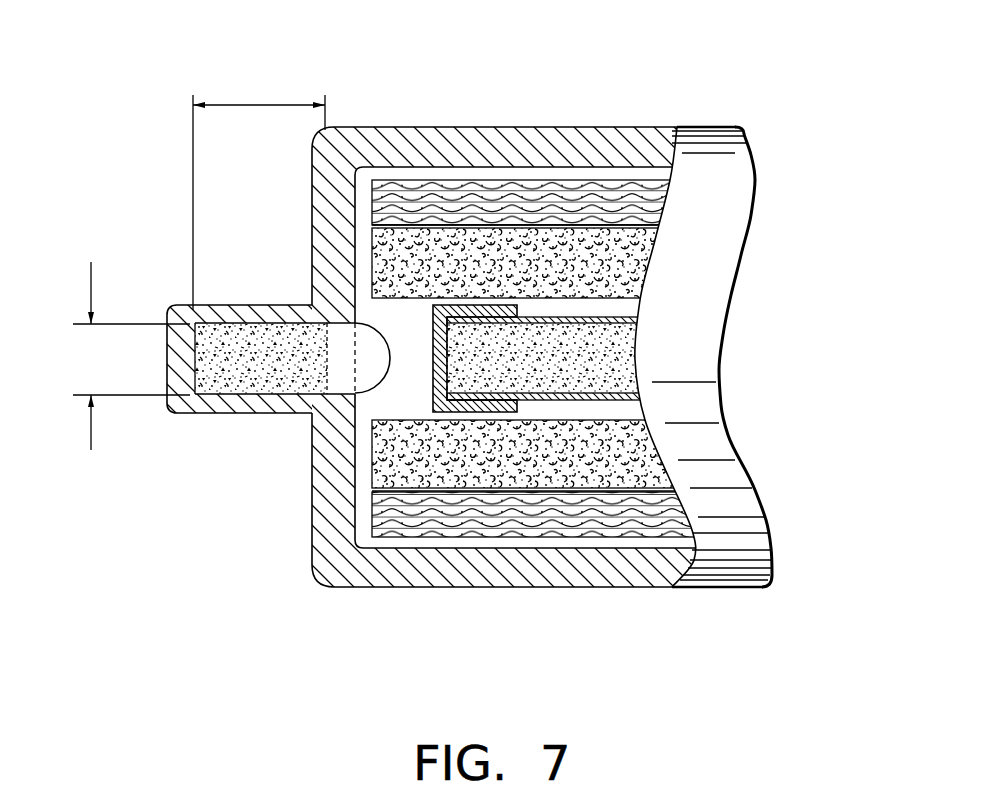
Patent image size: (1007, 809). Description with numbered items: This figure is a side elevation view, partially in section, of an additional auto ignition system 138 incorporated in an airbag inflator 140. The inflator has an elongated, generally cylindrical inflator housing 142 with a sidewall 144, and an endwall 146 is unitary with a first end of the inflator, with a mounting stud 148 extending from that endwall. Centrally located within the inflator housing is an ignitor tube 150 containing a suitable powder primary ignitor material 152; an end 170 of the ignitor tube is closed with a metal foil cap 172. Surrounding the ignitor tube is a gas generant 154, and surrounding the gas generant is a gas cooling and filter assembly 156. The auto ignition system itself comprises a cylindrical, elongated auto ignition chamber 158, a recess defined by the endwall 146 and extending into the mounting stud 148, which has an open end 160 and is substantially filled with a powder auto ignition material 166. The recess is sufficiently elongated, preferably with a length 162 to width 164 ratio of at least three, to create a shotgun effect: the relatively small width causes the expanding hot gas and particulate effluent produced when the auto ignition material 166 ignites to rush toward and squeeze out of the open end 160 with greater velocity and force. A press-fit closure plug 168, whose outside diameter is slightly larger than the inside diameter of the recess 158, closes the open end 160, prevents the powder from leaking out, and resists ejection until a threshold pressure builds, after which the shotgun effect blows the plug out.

The auto ignition system 138 is at (180, 413).
The airbag inflator 140 is at (558, 84).
The inflator housing 142 is at (627, 125).
The sidewall 144 is at (392, 127).
The endwall 146 is at (312, 555).
The mounting stud 148 is at (167, 306).
The ignitor tube 150 is at (605, 322).
The primary ignitor material 152 is at (622, 353).
The gas generant 154 is at (650, 247).
The gas cooling and filter assembly 156 is at (673, 190).
The auto ignition chamber 158 is at (290, 396).
The open end 160 is at (358, 397).
The length 162 is at (250, 105).
The width 164 is at (90, 287).
The auto ignition material 166 is at (237, 396).
The press-fit closure plug 168 is at (358, 330).
The end 170 is at (460, 402).
The metal foil cap 172 is at (506, 406).